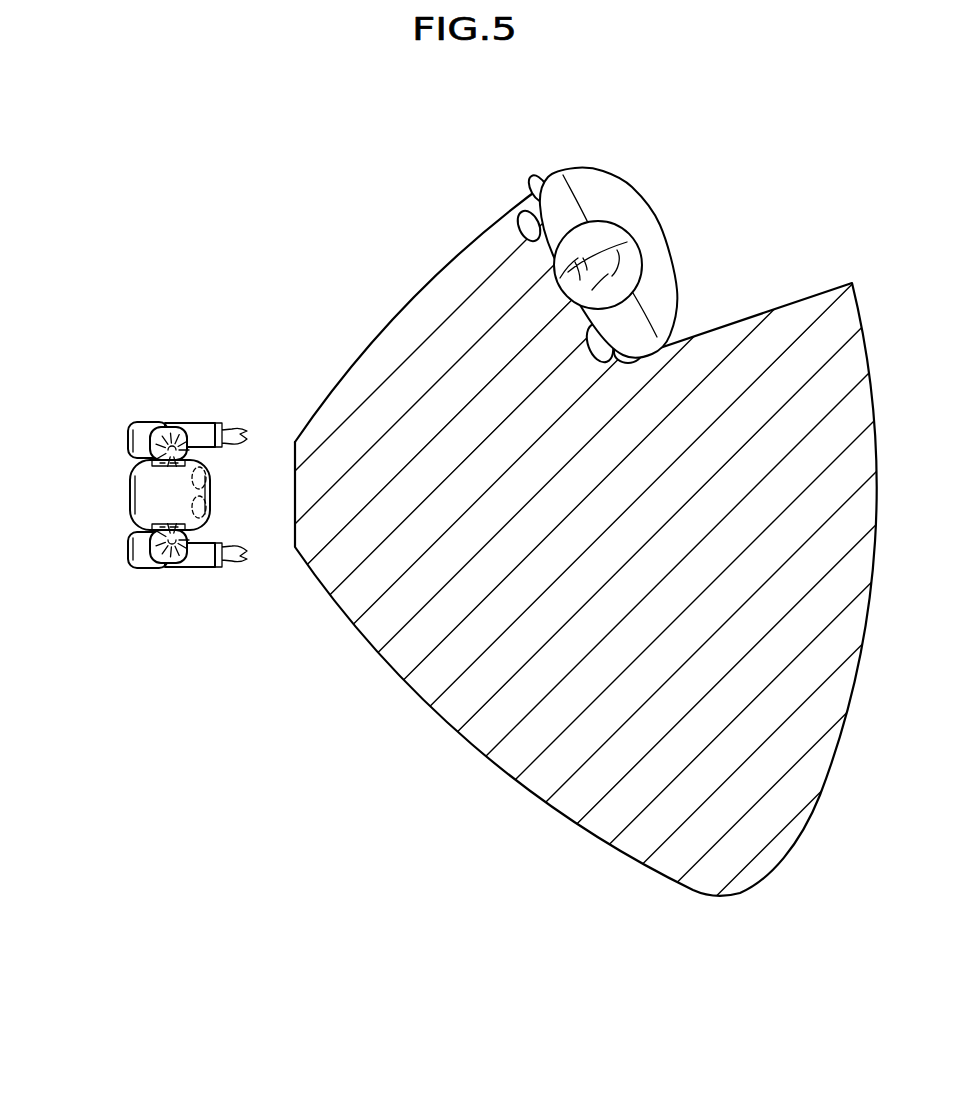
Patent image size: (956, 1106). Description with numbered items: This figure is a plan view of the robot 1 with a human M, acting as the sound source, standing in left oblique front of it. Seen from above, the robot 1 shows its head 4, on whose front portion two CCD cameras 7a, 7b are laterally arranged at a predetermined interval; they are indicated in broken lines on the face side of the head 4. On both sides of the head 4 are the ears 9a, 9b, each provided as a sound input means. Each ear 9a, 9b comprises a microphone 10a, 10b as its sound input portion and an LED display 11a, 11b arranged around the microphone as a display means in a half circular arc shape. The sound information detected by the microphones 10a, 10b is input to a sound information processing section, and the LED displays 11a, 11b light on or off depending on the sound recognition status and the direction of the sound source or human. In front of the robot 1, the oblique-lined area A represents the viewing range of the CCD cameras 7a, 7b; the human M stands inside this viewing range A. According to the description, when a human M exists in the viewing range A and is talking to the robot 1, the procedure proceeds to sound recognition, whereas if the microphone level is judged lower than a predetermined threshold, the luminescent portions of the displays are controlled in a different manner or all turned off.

The robot 1 is at (91, 492).
The head 4 is at (140, 505).
The CCD camera 7a is at (212, 475).
The CCD camera 7b is at (212, 510).
The ear 9a is at (163, 440).
The ear 9b is at (170, 548).
The microphone 10a is at (188, 427).
The microphone 10b is at (193, 557).
The LED display 11a is at (188, 457).
The LED display 11b is at (151, 556).
The human M is at (623, 210).
The viewing range A is at (447, 727).